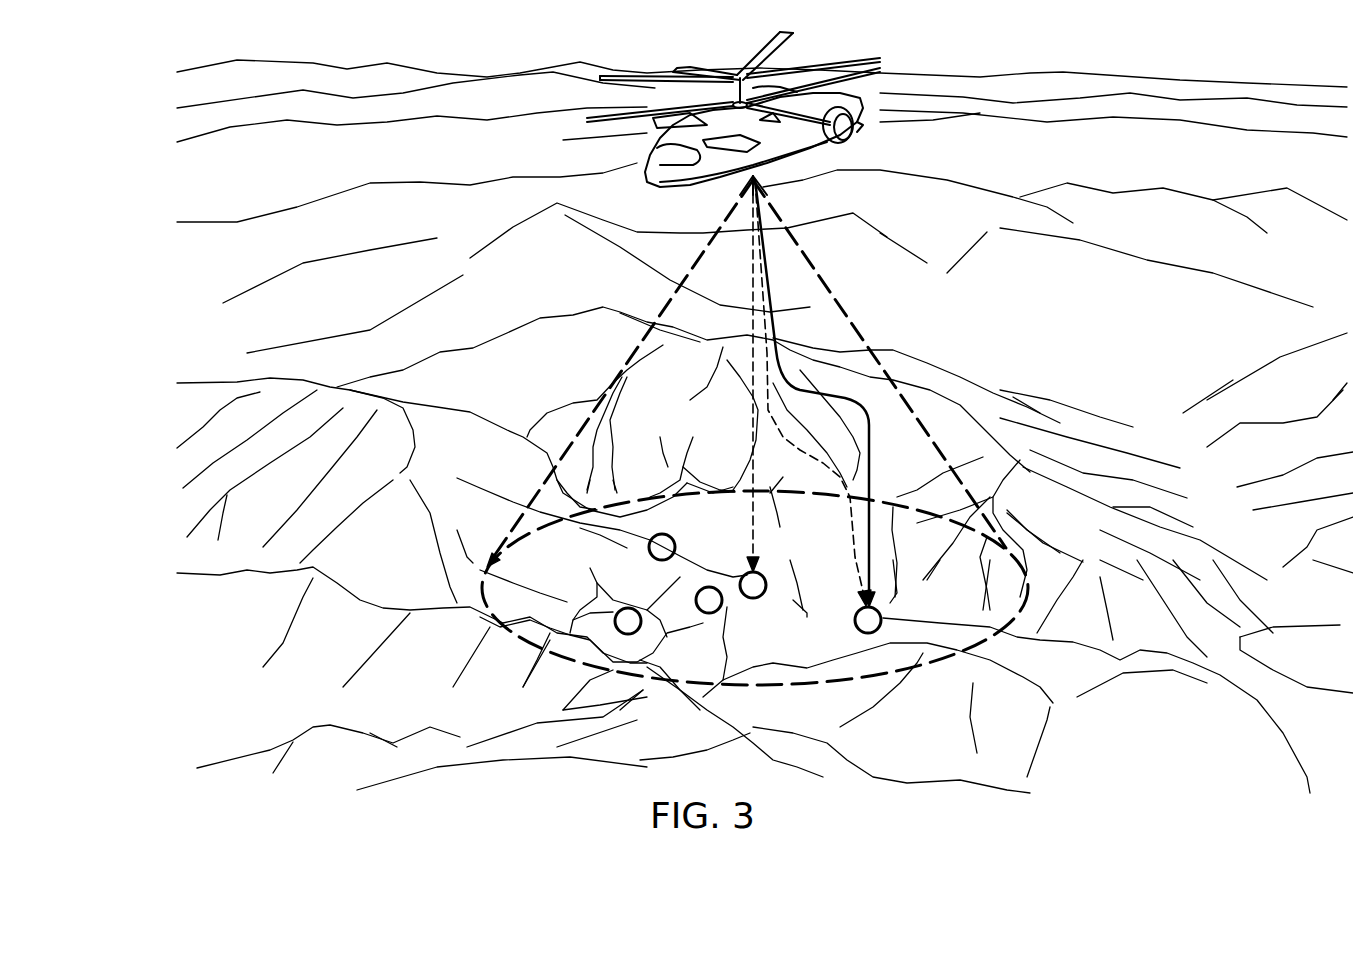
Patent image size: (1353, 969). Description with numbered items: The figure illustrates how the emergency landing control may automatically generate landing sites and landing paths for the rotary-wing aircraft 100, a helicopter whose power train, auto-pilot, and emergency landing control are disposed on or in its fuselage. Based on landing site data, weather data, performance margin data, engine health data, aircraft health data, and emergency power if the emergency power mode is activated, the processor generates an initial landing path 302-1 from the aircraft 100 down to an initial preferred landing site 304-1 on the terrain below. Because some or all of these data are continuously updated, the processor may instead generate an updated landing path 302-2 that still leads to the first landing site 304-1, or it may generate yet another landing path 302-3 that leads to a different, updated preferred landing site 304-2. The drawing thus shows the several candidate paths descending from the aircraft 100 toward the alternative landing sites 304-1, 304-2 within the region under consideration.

The rotary-wing aircraft 100 is at (782, 113).
The initial landing path 302-1 is at (842, 392).
The updated landing path 302-2 is at (845, 525).
The another landing path 302-3 is at (753, 435).
The initial preferred landing site 304-1 is at (878, 620).
The updated preferred landing site 304-2 is at (757, 597).